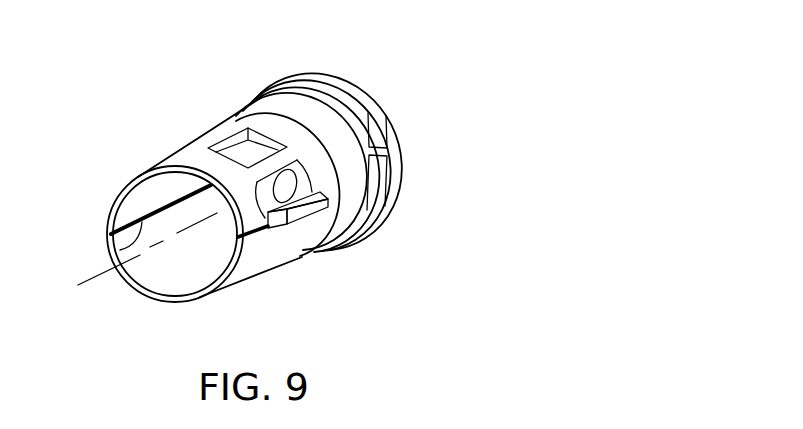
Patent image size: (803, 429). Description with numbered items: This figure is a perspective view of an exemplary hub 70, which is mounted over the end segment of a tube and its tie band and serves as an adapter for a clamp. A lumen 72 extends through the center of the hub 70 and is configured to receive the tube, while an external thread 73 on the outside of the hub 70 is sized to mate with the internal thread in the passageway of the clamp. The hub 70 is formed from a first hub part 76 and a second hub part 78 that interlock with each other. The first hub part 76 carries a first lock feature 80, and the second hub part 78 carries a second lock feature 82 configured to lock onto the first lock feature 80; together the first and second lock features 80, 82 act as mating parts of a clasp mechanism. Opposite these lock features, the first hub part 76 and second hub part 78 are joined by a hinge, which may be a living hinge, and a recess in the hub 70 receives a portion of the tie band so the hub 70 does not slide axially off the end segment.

The hub 70 is at (389, 47).
The lumen 72 is at (183, 268).
The external thread 73 is at (342, 82).
The first hub part 76 is at (132, 182).
The second hub part 78 is at (249, 279).
The first lock feature 80 is at (302, 185).
The second lock feature 82 is at (303, 224).